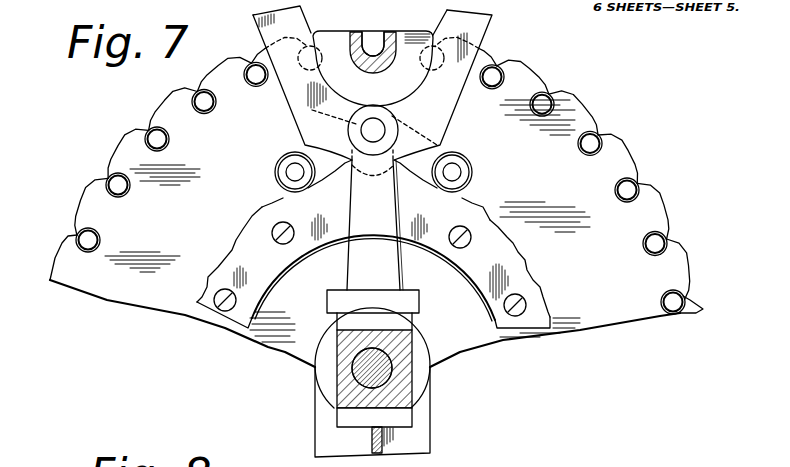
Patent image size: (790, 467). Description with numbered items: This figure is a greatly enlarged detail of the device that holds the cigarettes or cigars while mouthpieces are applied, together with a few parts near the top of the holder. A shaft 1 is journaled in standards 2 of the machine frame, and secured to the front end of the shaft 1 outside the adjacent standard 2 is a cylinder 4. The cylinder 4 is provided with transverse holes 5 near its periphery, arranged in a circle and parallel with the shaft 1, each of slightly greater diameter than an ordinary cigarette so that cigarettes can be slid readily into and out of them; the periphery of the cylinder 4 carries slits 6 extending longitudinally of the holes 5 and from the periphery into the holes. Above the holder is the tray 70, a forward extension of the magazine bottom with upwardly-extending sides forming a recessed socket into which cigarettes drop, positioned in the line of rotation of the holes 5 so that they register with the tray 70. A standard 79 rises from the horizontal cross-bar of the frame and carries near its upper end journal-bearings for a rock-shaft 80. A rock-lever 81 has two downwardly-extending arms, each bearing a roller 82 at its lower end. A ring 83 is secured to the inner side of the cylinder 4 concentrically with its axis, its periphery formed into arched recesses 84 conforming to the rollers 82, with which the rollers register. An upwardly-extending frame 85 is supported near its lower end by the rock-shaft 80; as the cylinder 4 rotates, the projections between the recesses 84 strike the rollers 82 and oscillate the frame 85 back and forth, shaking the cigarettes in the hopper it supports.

The shaft 1 is at (380, 372).
The standards 2 is at (415, 438).
The cylinder 4 is at (376, 208).
The transverse holes 5 is at (360, 40).
The slits 6 is at (373, 40).
The tray 70 is at (390, 42).
The standard 79 is at (373, 231).
The rock-shaft 80 is at (366, 130).
The rock-lever 81 is at (440, 146).
The rollers 82 is at (275, 172).
The ring 83 is at (373, 244).
The arched recesses 84 is at (258, 204).
The frame 85 is at (254, 30).